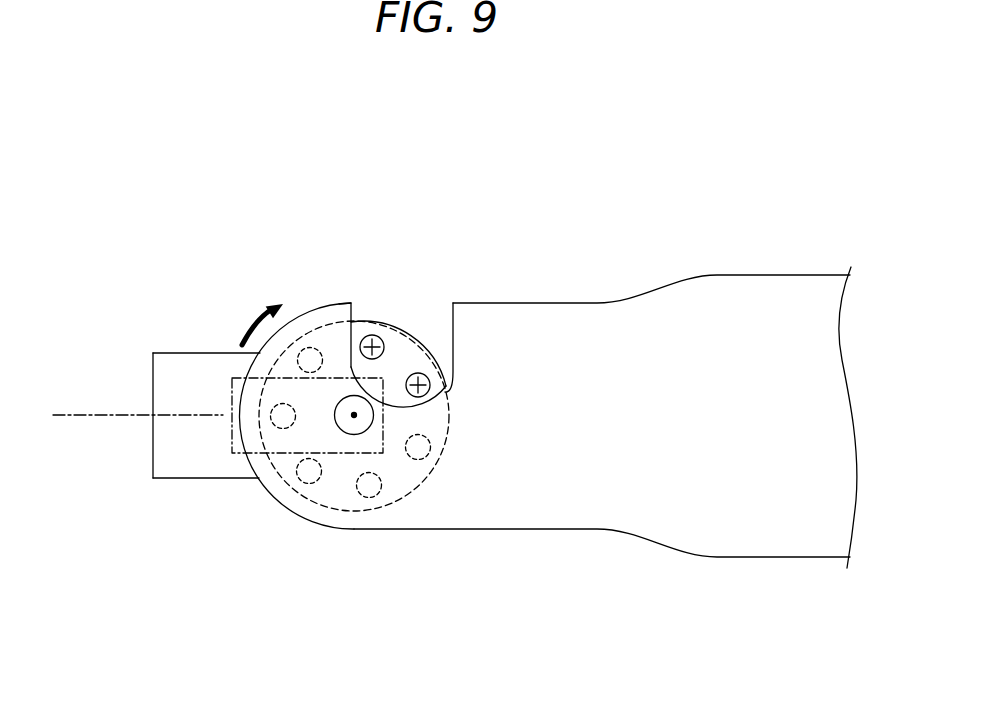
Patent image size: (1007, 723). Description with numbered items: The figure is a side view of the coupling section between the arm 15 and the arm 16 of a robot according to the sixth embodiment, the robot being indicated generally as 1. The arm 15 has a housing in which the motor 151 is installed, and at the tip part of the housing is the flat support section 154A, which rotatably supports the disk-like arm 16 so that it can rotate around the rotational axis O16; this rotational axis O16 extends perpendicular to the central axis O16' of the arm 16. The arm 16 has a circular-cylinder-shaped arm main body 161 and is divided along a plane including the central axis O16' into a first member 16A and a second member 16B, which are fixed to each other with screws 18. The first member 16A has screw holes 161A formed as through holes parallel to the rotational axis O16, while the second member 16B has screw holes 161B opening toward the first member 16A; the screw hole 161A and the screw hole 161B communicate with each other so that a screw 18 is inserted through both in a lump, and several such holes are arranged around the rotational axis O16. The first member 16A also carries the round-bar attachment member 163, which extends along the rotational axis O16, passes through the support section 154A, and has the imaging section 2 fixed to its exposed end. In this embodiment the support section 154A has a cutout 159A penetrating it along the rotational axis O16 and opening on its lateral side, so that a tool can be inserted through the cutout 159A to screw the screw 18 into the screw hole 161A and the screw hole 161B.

The recording device 1 is at (753, 144).
The arm 15 is at (613, 228).
The motor 151 is at (540, 302).
The support section 154A is at (420, 507).
The cutout 159A is at (366, 322).
The arm 16 is at (195, 351).
The first member 16A is at (298, 512).
The second member 16B is at (167, 442).
The arm main body 161 is at (190, 451).
The screw hole 161A is at (374, 336).
The screw hole 161B is at (420, 374).
The attachment member 163 is at (362, 425).
The screw 18 is at (372, 336).
The imaging section 2 is at (281, 378).
The rotational axis O16 is at (339, 526).
The central axis O16' is at (138, 373).